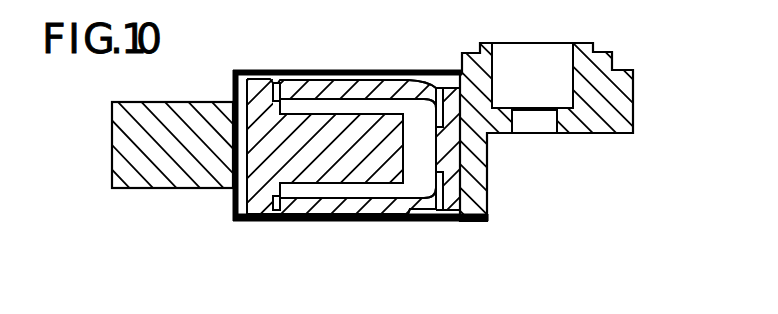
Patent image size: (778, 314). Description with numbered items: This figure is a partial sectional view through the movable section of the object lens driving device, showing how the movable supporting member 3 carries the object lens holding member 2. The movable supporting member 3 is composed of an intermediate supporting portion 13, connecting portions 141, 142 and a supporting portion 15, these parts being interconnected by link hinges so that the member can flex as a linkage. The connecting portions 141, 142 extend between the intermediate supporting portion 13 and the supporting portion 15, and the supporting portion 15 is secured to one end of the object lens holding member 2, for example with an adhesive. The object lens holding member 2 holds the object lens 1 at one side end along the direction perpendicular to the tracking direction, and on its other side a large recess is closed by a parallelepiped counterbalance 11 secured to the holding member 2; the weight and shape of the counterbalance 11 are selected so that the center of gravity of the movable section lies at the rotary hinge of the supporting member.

The object lens 1 is at (543, 60).
The object lens holding member 2 is at (615, 88).
The movable supporting member 3 is at (262, 219).
The counterbalance 11 is at (135, 147).
The intermediate supporting portion 13 is at (265, 90).
The connecting portion 141 is at (363, 87).
The connecting portion 142 is at (353, 217).
The supporting portion 15 is at (452, 210).